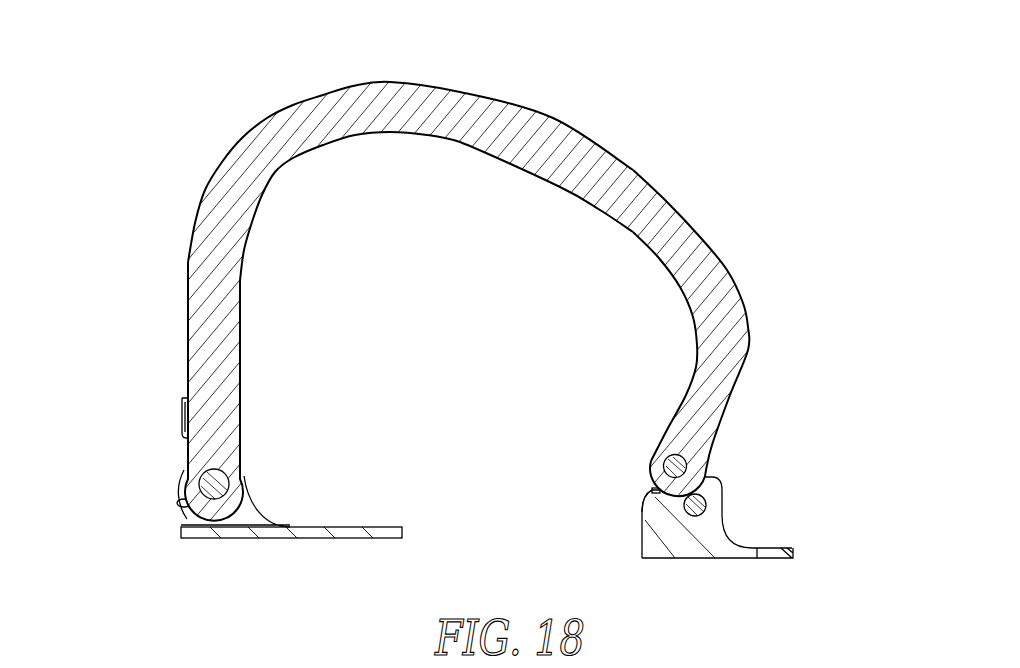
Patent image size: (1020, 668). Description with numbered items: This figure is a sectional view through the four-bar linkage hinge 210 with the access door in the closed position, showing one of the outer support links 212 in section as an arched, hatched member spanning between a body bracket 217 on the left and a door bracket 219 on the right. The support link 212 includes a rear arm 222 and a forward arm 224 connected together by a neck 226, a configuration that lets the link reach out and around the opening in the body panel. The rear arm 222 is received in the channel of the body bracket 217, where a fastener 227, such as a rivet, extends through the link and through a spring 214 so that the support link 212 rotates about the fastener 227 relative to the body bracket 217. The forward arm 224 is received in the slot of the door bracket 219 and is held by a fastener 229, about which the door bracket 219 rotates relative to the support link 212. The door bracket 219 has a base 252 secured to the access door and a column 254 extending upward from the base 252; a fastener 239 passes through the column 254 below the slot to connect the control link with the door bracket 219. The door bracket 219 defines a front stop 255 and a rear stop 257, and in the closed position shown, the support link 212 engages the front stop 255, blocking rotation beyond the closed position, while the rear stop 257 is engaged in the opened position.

The four-bar linkage hinge 210 is at (778, 142).
The outer support link 212 is at (607, 137).
The spring 214 is at (183, 418).
The body bracket 217 is at (328, 527).
The door bracket 219 is at (765, 538).
The rear arm 222 is at (207, 292).
The forward arm 224 is at (713, 387).
The neck 226 is at (508, 116).
The fastener 227 is at (221, 472).
The fastener 229 is at (661, 445).
The fastener 239 is at (695, 527).
The base 252 is at (793, 553).
The column 254 is at (708, 518).
The front stop 255 is at (702, 473).
The rear stop 257 is at (646, 510).